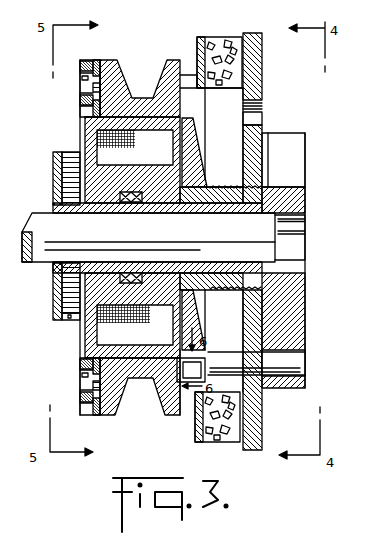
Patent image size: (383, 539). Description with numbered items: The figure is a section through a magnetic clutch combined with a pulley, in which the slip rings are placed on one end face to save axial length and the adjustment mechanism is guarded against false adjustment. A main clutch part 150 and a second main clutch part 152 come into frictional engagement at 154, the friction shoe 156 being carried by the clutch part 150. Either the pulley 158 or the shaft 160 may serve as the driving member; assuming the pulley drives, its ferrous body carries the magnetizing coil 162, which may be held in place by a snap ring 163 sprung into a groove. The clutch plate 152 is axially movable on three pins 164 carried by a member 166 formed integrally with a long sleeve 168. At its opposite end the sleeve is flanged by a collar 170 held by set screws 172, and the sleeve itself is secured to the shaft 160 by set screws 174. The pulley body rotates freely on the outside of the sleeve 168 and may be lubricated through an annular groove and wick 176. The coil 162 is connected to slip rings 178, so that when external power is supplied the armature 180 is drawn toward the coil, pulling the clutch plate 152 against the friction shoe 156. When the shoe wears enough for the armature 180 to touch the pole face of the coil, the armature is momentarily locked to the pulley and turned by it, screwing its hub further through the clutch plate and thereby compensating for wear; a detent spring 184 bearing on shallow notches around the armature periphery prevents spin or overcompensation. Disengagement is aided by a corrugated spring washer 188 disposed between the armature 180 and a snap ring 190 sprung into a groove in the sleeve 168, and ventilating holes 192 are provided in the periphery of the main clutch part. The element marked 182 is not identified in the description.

The main clutch part 150 is at (197, 52).
The main clutch part 152 is at (263, 71).
The frictional engagement 154 is at (240, 34).
The friction shoe 156 is at (222, 40).
The pulley 158 is at (115, 63).
The shaft 160 is at (43, 253).
The magnetizing coil 162 is at (85, 128).
The snap ring 163 is at (170, 307).
The pins 164 is at (293, 365).
The member 166 is at (298, 290).
The sleeve 168 is at (55, 203).
The collar 170 is at (54, 297).
The set screws 172 is at (62, 155).
The set screws 174 is at (62, 319).
The annular groove and wick 176 is at (113, 213).
The slip rings 178 is at (82, 86).
The armature 180 is at (194, 149).
The spacer 182 is at (263, 179).
The detent spring 184 is at (223, 345).
The spring washer 188 is at (212, 200).
The snap ring 190 is at (187, 212).
The ventilating holes 192 is at (184, 395).